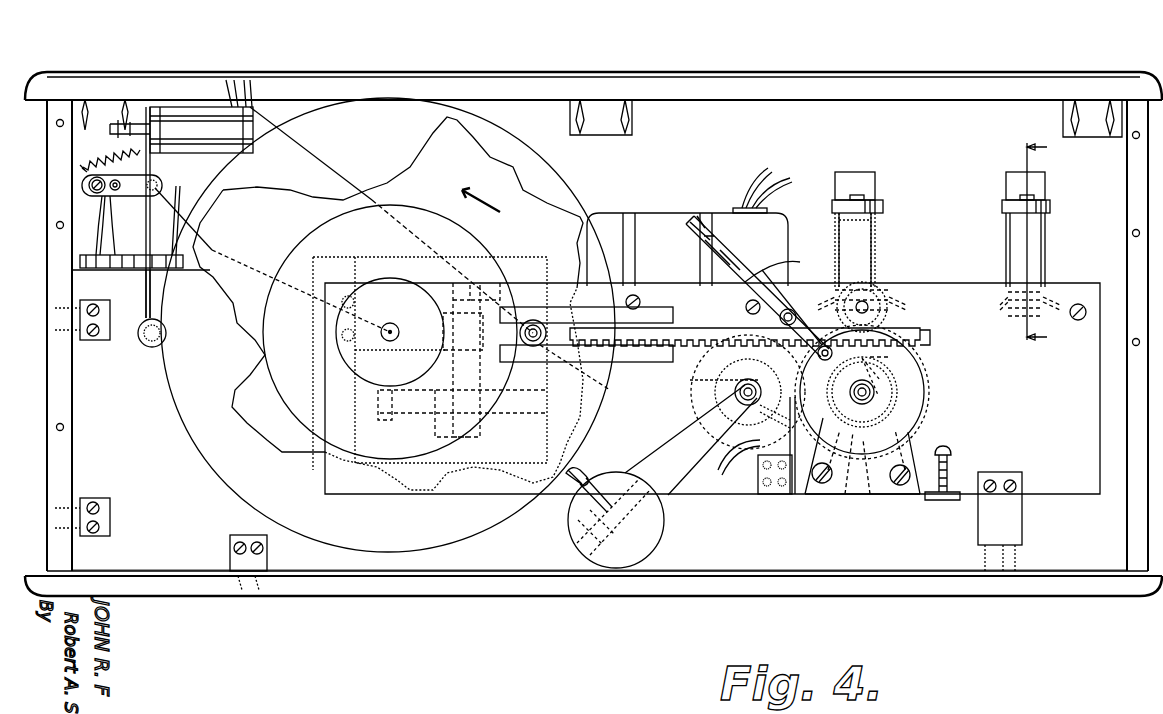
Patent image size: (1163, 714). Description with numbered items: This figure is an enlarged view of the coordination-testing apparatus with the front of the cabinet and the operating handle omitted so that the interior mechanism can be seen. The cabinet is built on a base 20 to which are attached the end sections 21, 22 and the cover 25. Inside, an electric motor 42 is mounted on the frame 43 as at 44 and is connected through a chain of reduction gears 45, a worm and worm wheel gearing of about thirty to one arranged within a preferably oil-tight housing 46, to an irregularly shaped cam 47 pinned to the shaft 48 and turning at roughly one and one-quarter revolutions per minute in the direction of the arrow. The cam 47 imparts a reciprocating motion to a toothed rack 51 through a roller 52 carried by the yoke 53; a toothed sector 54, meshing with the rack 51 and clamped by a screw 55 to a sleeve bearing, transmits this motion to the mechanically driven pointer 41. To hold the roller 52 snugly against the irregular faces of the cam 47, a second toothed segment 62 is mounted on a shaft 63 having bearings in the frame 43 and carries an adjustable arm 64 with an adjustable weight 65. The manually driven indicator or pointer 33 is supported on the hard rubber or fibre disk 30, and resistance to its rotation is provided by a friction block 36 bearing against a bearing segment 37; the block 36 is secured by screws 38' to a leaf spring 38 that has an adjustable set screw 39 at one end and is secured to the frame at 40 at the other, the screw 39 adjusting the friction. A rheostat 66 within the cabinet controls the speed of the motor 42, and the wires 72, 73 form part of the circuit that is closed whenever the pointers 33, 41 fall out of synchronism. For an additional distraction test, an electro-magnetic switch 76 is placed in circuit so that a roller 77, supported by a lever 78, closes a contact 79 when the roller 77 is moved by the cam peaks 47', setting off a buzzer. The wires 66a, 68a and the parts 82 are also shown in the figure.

The base 20 is at (593, 602).
The end section 21 is at (55, 293).
The end section 22 is at (1128, 172).
The cover 25 is at (778, 88).
The hard rubber or fibre disk 30 is at (861, 431).
The indicator or pointer 33 is at (784, 292).
The friction block 36 is at (912, 402).
The bearing segment 37 is at (821, 496).
The leaf spring 38 is at (841, 485).
The screws 38' is at (861, 504).
The adjustable set screw 39 is at (952, 470).
The frame attachment 40 is at (768, 474).
The mechanically driven pointer 41 is at (692, 218).
The electric motor 42 is at (664, 218).
The frame 43 is at (958, 282).
The motor mounting 44 is at (746, 306).
The chain of reduction gears 45 is at (430, 363).
The housing 46 is at (388, 325).
The cam 47 is at (388, 303).
The cam peaks 47' is at (390, 163).
The shaft 48 is at (390, 323).
The toothed rack 51 is at (948, 338).
The roller 52 is at (581, 360).
The yoke 53 is at (553, 323).
The toothed sector 54 is at (890, 357).
The screw 55 is at (905, 387).
The second toothed segment 62 is at (727, 392).
The shaft 63 is at (705, 422).
The adjustable arm 64 is at (680, 466).
The adjustable weight 65 is at (645, 528).
The rheostat 66 is at (599, 540).
The lead wire 66a is at (766, 172).
The lead wire 68a is at (784, 176).
The wire 72 is at (738, 462).
The wire 73 is at (762, 427).
The electro-magnetic switch 76 is at (194, 136).
The roller 77 is at (158, 348).
The lever 78 is at (145, 302).
The contact 79 is at (235, 248).
The contact wires 82 is at (97, 232).